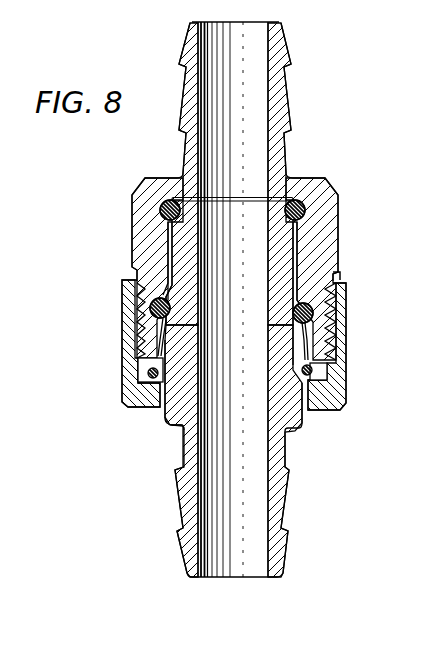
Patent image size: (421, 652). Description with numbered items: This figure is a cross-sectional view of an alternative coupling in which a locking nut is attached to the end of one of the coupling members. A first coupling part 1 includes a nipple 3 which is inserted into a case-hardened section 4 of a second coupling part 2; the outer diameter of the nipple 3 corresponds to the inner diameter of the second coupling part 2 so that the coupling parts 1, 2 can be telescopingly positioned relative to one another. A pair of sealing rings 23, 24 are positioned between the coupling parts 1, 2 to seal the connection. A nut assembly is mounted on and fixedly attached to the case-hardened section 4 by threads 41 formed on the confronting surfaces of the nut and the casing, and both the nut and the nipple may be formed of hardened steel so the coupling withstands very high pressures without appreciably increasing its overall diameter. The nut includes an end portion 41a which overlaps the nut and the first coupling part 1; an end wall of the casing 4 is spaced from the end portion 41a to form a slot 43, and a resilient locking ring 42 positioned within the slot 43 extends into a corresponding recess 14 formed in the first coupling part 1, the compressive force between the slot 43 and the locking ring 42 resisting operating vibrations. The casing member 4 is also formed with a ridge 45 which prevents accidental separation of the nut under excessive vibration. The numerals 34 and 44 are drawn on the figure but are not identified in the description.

The first coupling part 1 is at (273, 497).
The second coupling part 2 is at (283, 47).
The nipple 3 is at (162, 426).
The case-hardened section 4 is at (328, 210).
The recess 14 is at (298, 412).
The sealing ring 23 is at (293, 198).
The sealing ring 24 is at (150, 312).
The split ring 34 is at (156, 346).
The threads 41 is at (125, 294).
The end portion 41a is at (326, 394).
The resilient locking ring 42 is at (122, 401).
The slot 43 is at (139, 373).
The retaining element 44 is at (328, 370).
The ridge 45 is at (338, 275).